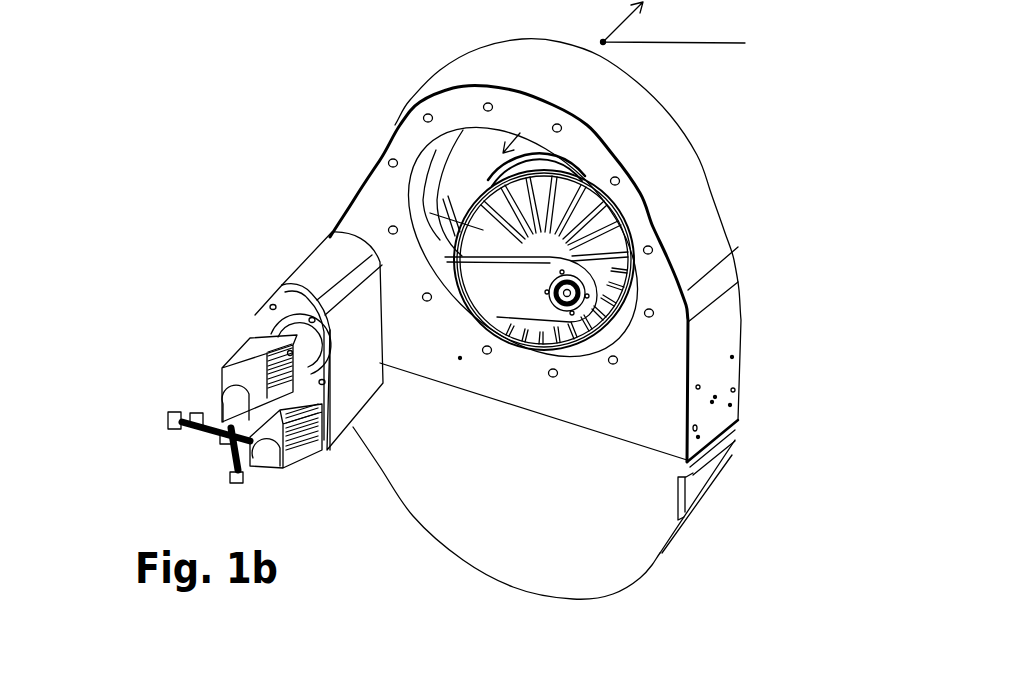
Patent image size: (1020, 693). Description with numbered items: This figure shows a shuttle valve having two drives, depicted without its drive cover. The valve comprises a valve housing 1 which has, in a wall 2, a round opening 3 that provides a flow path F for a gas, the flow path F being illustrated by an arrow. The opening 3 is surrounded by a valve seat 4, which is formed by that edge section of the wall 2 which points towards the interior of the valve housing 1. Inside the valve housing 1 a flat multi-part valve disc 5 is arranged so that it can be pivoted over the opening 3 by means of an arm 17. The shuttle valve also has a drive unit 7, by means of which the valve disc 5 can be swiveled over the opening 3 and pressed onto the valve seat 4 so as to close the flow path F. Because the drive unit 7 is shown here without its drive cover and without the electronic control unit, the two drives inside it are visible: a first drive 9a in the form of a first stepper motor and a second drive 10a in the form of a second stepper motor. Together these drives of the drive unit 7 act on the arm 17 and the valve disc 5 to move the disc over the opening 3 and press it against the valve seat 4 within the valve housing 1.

The valve housing 1 is at (482, 72).
The wall 2 is at (470, 173).
The round opening 3 is at (440, 153).
The valve seat 4 is at (445, 198).
The valve disc 5 is at (541, 193).
The arm 17 is at (630, 245).
The drive unit 7 is at (186, 283).
The first drive 9a is at (243, 383).
The second drive 10a is at (272, 443).
The flow path F is at (639, 77).